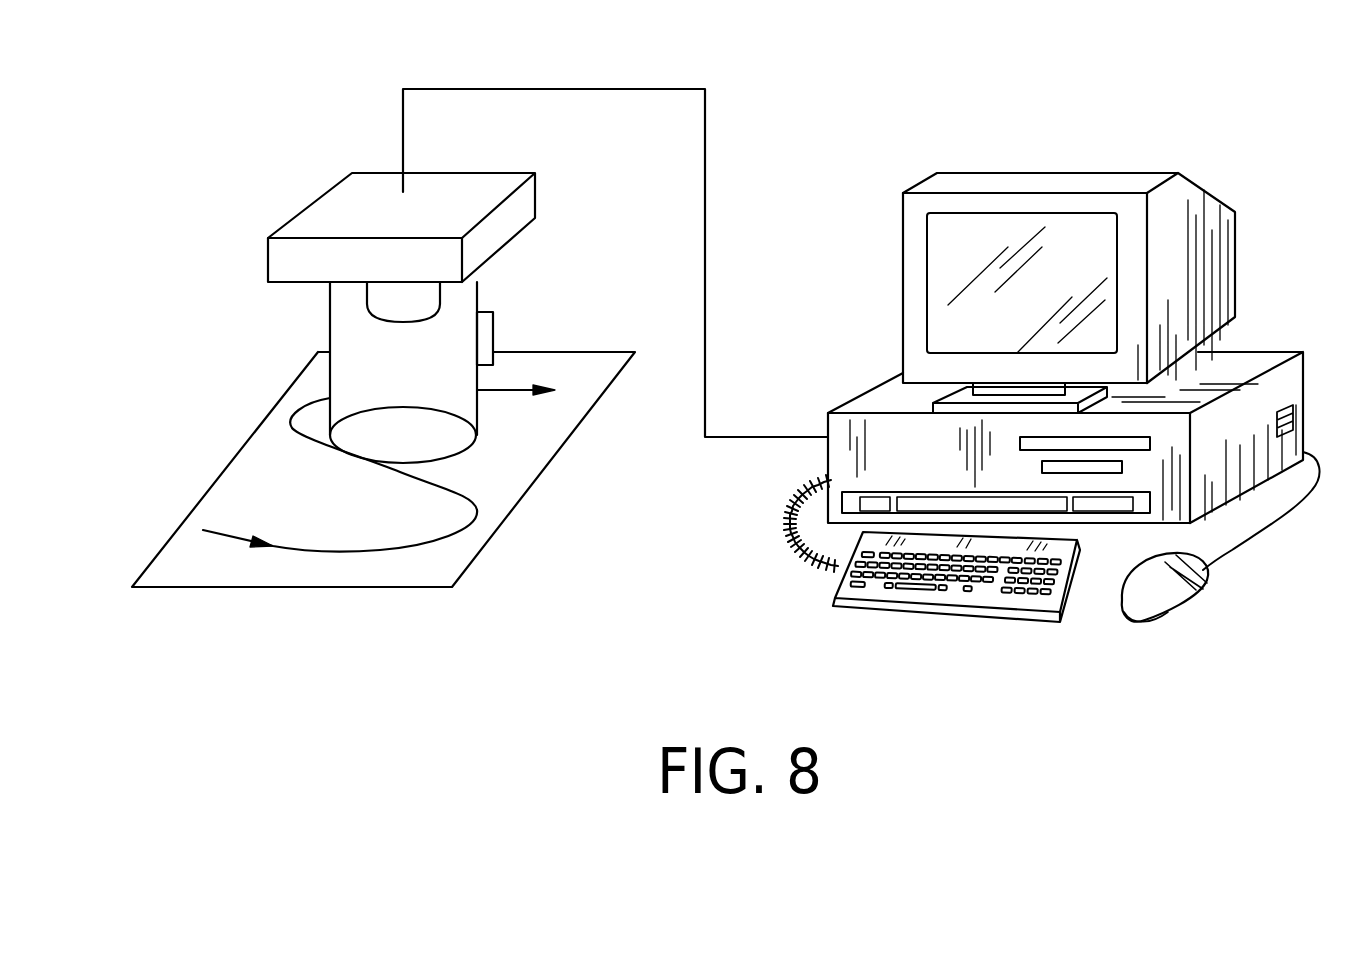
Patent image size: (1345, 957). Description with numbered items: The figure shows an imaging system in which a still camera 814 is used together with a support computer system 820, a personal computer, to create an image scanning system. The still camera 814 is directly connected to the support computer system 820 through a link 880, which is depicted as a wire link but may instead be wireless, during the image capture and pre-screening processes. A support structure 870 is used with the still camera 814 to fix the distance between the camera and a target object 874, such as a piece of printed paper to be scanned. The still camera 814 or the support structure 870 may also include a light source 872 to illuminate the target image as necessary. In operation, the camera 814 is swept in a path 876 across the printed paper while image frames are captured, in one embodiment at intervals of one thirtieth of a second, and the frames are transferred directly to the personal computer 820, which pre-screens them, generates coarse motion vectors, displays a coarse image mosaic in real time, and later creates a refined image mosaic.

The still camera 814 is at (325, 192).
The support computer system 820 is at (868, 392).
The support structure 870 is at (330, 315).
The light source 872 is at (493, 330).
The target object 874 is at (215, 480).
The path 876 is at (327, 550).
The link 880 is at (625, 88).